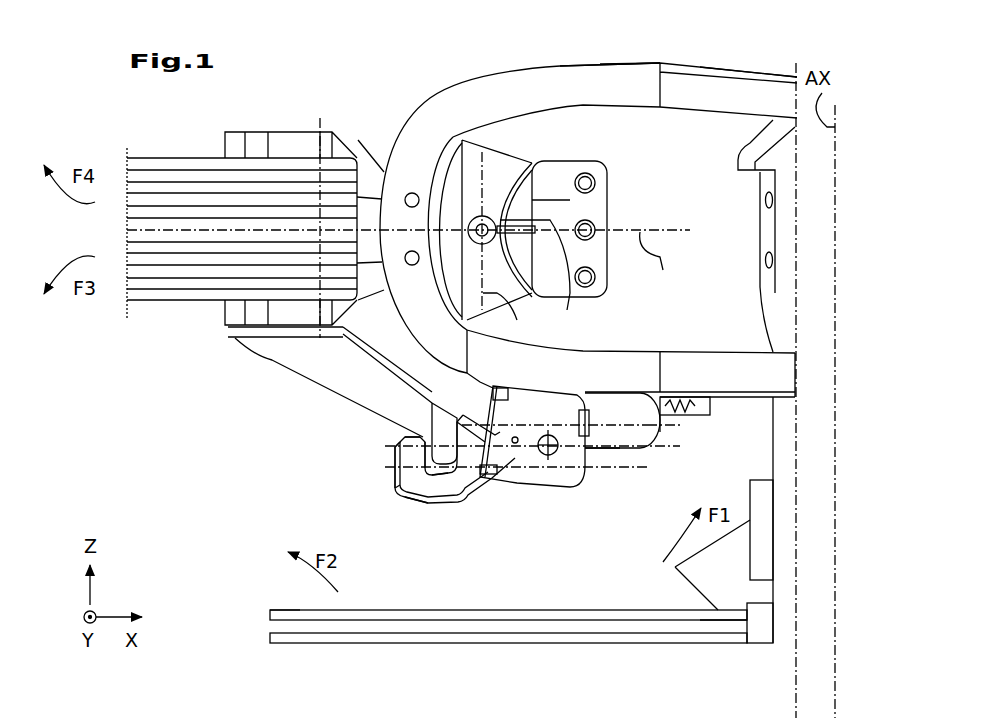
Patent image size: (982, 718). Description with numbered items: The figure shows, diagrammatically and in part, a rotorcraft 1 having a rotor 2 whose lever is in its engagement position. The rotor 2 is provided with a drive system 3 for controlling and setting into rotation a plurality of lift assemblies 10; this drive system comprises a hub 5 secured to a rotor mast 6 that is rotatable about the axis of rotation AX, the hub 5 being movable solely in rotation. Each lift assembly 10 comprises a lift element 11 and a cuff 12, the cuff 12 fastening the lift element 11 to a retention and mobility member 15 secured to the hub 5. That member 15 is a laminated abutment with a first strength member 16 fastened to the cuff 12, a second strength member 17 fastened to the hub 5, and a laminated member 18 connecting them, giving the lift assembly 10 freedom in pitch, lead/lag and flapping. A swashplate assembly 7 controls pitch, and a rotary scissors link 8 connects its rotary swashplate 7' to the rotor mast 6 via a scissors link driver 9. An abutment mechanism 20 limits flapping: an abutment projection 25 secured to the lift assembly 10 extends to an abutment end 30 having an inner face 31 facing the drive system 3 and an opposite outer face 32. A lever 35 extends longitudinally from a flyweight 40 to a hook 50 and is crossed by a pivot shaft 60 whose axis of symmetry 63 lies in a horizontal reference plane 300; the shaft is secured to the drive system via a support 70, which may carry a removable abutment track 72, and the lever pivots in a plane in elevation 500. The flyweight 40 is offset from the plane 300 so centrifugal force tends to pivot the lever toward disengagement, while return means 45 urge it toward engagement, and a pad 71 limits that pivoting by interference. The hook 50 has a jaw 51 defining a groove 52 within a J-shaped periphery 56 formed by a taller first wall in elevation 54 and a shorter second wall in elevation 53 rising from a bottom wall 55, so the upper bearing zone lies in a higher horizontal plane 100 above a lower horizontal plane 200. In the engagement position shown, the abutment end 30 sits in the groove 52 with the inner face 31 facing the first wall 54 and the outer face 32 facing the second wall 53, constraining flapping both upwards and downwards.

The rotorcraft 1 is at (608, 52).
The rotor 2 is at (718, 56).
The drive system 3 is at (768, 61).
The hub 5 is at (570, 66).
The rotor mast 6 is at (773, 420).
The swashplate assembly 7 is at (483, 628).
The rotary swashplate 7' is at (270, 584).
The rotary scissors link 8 is at (659, 583).
The scissors link driver 9 is at (750, 545).
The lift assembly 10 is at (142, 350).
The lift element 11 is at (170, 301).
The cuff 12 is at (358, 140).
The retention and mobility member 15 is at (530, 148).
The first strength member 16 is at (520, 202).
The second strength member 17 is at (453, 137).
The laminated member 18 is at (502, 167).
The abutment mechanism 20 is at (248, 481).
The abutment projection 25 is at (277, 362).
The abutment end 30 is at (490, 487).
The inner face 31 is at (513, 443).
The outer face 32 is at (410, 433).
The lever 35 is at (404, 524).
The flyweight 40 is at (660, 432).
The return means 45 is at (680, 403).
The hook 50 is at (397, 460).
The jaw 51 is at (393, 473).
The groove 52 is at (403, 510).
The second wall in elevation 53 is at (403, 447).
The first wall in elevation 54 is at (440, 473).
The bottom wall 55 is at (423, 470).
The J-shaped periphery 56 is at (407, 493).
The pivot shaft 60 is at (540, 490).
The axis of symmetry 63 is at (577, 447).
The support 70 is at (560, 493).
The pad 71 is at (513, 383).
The removable abutment track 72 is at (470, 368).
The higher horizontal plane 100 is at (610, 420).
The lower horizontal plane 200 is at (620, 470).
The horizontal reference plane 300 is at (663, 447).
The plane in elevation 500 is at (145, 321).